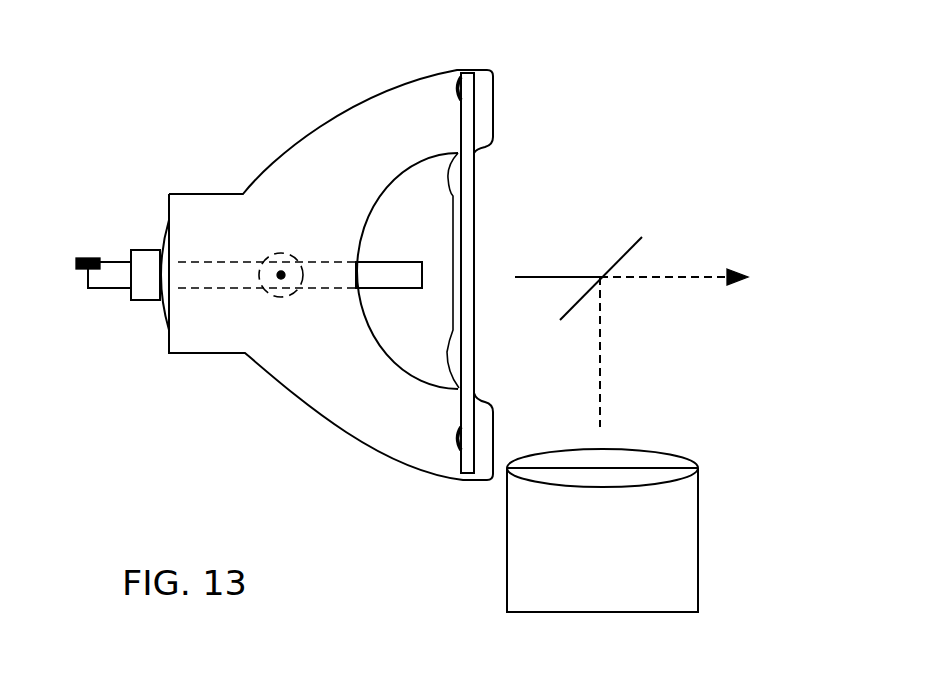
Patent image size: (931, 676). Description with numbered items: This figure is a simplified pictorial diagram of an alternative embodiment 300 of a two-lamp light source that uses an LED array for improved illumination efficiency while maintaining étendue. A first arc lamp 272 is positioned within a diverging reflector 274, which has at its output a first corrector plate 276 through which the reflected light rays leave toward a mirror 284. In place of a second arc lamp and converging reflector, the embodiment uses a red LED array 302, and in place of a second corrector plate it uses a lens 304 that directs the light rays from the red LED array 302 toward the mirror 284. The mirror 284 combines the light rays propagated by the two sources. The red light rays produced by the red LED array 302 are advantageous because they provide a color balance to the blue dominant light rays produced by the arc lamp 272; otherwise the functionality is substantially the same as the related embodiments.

The first arc lamp 272 is at (281, 275).
The diverging reflector 274 is at (342, 427).
The first corrector plate 276 is at (477, 181).
The mirror 284 is at (630, 250).
The alternative embodiment 300 is at (652, 137).
The red LED array 302 is at (523, 560).
The lens 304 is at (608, 458).